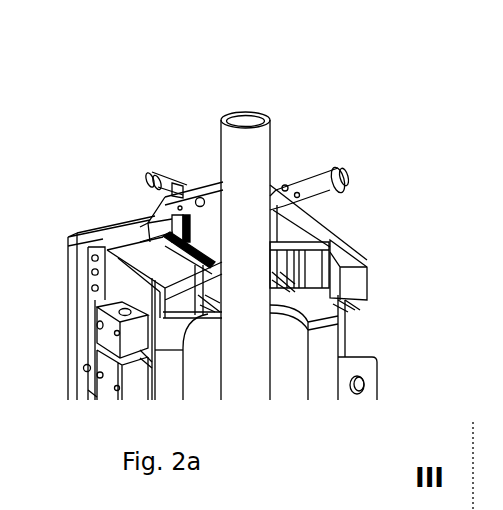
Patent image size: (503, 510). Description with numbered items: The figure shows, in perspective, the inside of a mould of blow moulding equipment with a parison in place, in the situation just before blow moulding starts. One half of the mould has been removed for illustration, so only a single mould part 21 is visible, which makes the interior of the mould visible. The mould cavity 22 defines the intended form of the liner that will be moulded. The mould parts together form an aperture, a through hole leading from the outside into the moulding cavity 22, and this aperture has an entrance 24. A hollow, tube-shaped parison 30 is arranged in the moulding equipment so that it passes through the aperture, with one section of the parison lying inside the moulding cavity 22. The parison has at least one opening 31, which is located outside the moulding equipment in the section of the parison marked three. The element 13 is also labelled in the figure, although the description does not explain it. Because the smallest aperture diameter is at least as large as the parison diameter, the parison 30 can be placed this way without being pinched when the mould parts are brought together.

The pivot rod 13 is at (324, 168).
The mould part 21 is at (123, 232).
The mould cavity 22 is at (298, 346).
The entrance 24 is at (334, 240).
The parison 30 is at (204, 144).
The opening 31 is at (248, 116).